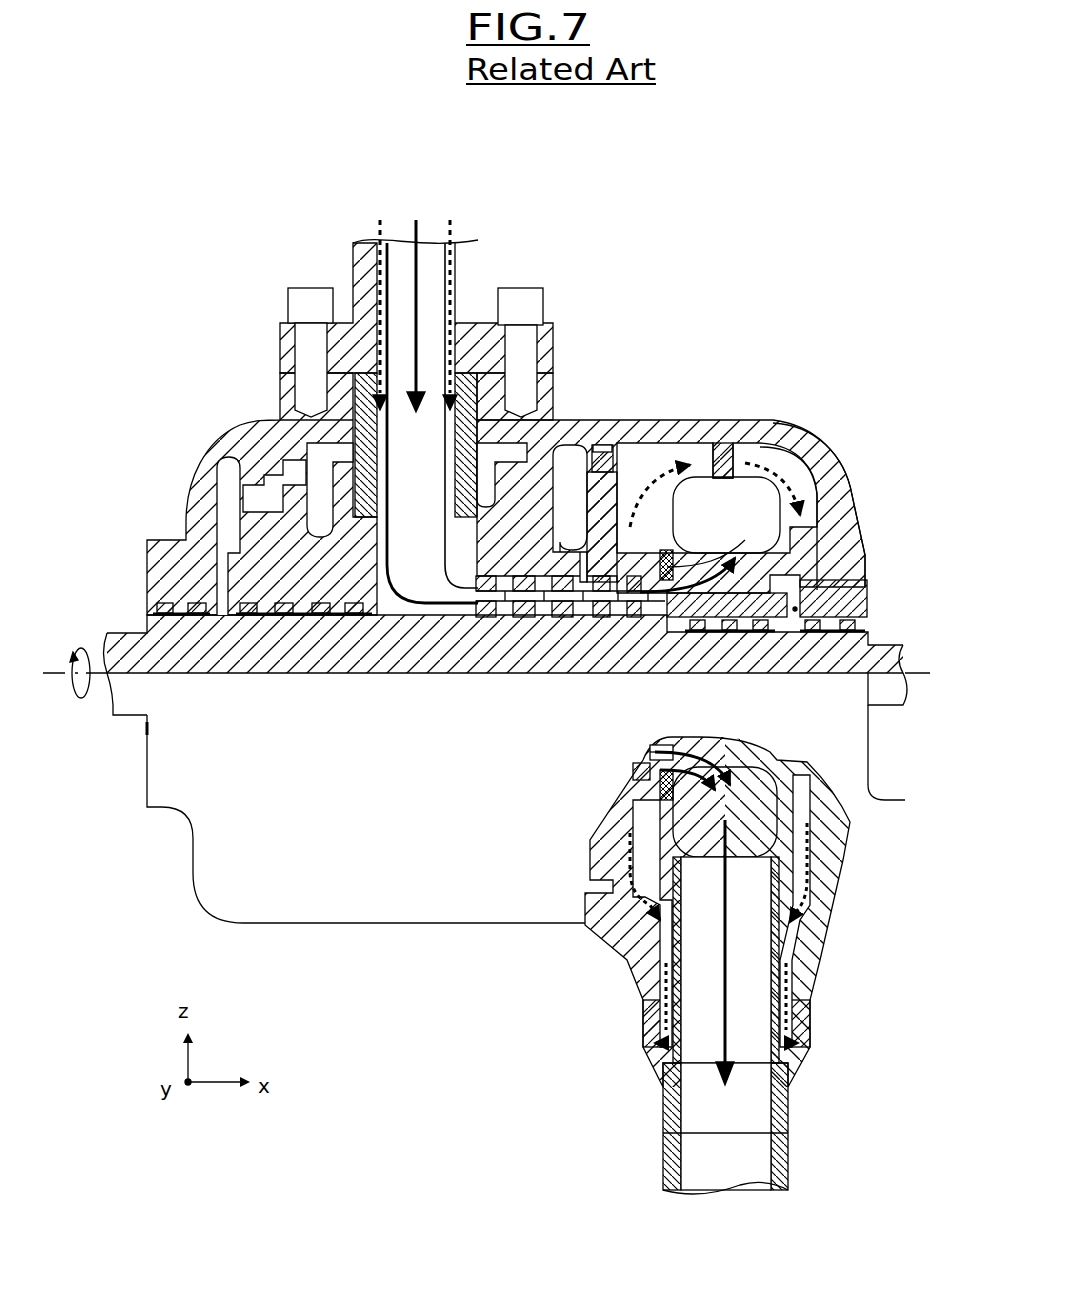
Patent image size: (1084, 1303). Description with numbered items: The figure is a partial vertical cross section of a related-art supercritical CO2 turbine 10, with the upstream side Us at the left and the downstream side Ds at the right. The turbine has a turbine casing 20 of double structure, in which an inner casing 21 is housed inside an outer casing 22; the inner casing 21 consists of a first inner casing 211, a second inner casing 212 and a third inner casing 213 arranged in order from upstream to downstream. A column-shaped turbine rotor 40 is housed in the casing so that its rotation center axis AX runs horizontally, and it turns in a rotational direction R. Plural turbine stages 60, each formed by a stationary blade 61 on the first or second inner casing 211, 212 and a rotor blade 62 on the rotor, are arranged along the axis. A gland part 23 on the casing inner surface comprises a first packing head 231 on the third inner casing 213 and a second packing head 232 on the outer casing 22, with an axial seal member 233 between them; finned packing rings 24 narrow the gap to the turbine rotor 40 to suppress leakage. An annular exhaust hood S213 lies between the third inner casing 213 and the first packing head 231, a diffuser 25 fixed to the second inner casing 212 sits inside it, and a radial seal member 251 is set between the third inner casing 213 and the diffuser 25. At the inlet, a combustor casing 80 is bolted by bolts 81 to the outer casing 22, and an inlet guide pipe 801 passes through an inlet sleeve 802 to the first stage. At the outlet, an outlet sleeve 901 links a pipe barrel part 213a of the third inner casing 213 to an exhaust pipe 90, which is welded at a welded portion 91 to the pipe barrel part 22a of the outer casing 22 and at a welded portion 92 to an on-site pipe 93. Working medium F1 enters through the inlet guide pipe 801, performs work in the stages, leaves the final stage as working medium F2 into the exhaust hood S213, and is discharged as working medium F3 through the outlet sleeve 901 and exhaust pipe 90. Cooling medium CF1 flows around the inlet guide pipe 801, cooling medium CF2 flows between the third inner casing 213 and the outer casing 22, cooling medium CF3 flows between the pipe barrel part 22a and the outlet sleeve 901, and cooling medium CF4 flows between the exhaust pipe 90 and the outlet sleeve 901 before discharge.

The supercritical CO2 turbine 10 is at (552, 135).
The turbine casing 20 is at (820, 312).
The inner casing 21 is at (755, 357).
The outer casing 22 is at (790, 440).
The pipe barrel part 22a is at (632, 978).
The gland part 23 is at (805, 665).
The packing ring 24 is at (170, 616).
The diffuser 25 is at (638, 772).
The turbine rotor 40 is at (120, 637).
The turbine stage 60 is at (557, 669).
The stationary blade 61 is at (485, 625).
The rotor blade 62 is at (520, 625).
The combustor casing 80 is at (290, 345).
The bolt 81 is at (318, 292).
The exhaust pipe 90 is at (785, 1095).
The welded portion 91 is at (655, 1010).
The welded portion 92 is at (670, 1138).
The on-site pipe 93 is at (782, 1146).
The first inner casing 211 is at (545, 462).
The second inner casing 212 is at (600, 447).
The third inner casing 213 is at (722, 480).
The pipe barrel part 213a is at (790, 872).
The first packing head 231 is at (715, 632).
The second packing head 232 is at (825, 632).
The axial seal member 233 is at (800, 611).
The radial seal member 251 is at (658, 787).
The inlet guide pipe 801 is at (350, 428).
The inlet sleeve 802 is at (362, 395).
The outlet sleeve 901 is at (775, 942).
The exhaust hood S213 is at (738, 508).
The cooling medium CF1 is at (378, 225).
The cooling medium CF2 is at (657, 460).
The cooling medium CF3 is at (630, 845).
The cooling medium CF4 is at (640, 1045).
The working medium F1 is at (416, 222).
The working medium F2 is at (713, 578).
The working medium F3 is at (718, 1083).
The rotational direction R is at (72, 655).
The rotation center axis AX is at (60, 683).
The upstream side Us is at (524, 242).
The downstream side Ds is at (816, 242).